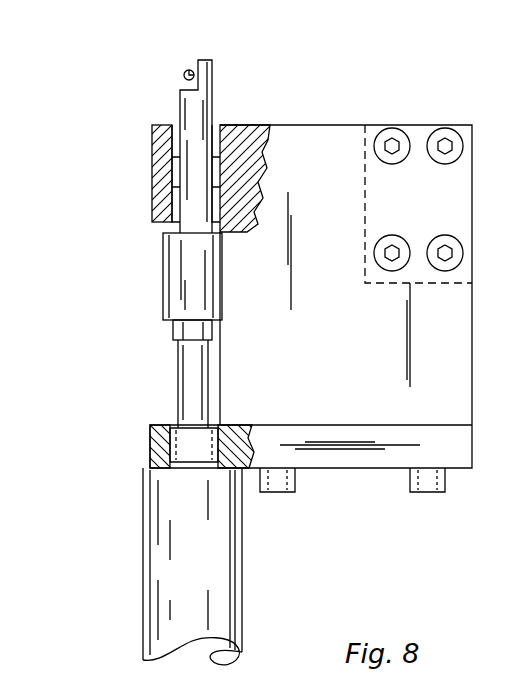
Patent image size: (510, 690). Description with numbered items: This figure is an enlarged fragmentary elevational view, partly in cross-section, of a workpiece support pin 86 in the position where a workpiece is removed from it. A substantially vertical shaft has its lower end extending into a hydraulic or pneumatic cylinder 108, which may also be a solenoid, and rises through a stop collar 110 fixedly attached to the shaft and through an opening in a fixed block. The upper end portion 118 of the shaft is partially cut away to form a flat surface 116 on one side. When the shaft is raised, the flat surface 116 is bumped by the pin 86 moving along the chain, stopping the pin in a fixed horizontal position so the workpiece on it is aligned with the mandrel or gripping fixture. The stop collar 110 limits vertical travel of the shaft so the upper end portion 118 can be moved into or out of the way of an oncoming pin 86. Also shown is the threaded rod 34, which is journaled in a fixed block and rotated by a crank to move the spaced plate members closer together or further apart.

The flat surface 116 is at (198, 62).
The upper end portion 118 is at (209, 76).
The pin 86 is at (184, 76).
The stop collar 110 is at (190, 282).
The rod 34 is at (193, 382).
The cylinder 108 is at (180, 552).